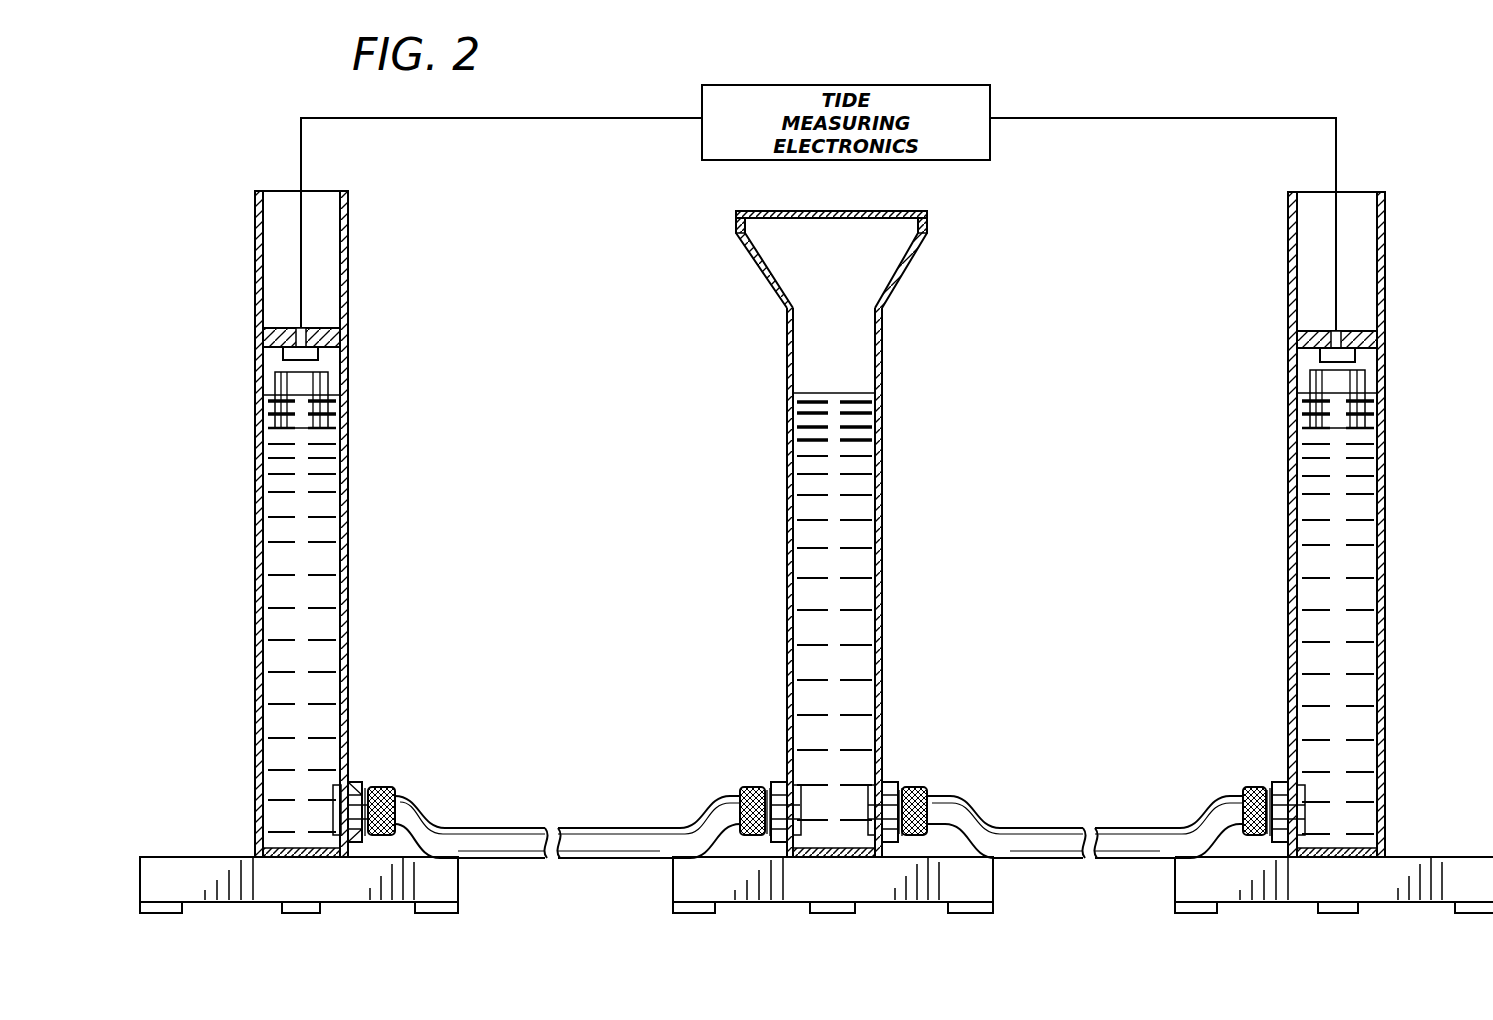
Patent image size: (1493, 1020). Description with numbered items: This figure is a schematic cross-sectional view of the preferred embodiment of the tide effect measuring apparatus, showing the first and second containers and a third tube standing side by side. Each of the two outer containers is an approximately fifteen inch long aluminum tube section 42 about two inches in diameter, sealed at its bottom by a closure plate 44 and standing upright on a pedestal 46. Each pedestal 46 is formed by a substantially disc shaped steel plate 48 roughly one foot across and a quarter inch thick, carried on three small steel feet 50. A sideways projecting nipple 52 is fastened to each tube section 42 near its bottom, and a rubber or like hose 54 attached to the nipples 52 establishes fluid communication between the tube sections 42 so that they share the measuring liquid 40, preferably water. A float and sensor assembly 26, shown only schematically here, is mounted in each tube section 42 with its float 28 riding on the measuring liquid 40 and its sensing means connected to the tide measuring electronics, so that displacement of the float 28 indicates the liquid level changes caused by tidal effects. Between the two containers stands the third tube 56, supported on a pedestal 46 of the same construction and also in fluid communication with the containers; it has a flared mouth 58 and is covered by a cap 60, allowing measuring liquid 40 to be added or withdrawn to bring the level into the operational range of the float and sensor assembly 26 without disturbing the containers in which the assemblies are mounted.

The float and sensor assembly 26 is at (348, 363).
The float 28 is at (323, 383).
The measuring liquid 40 is at (322, 528).
The tube section 42 is at (348, 563).
The closure plate 44 is at (298, 856).
The pedestal 46 is at (458, 887).
The steel plate 48 is at (192, 862).
The steel feet 50 is at (321, 906).
The nipple 52 is at (374, 787).
The hose 54 is at (612, 828).
The third tube 56 is at (882, 467).
The flared mouth 58 is at (905, 266).
The cap 60 is at (927, 217).